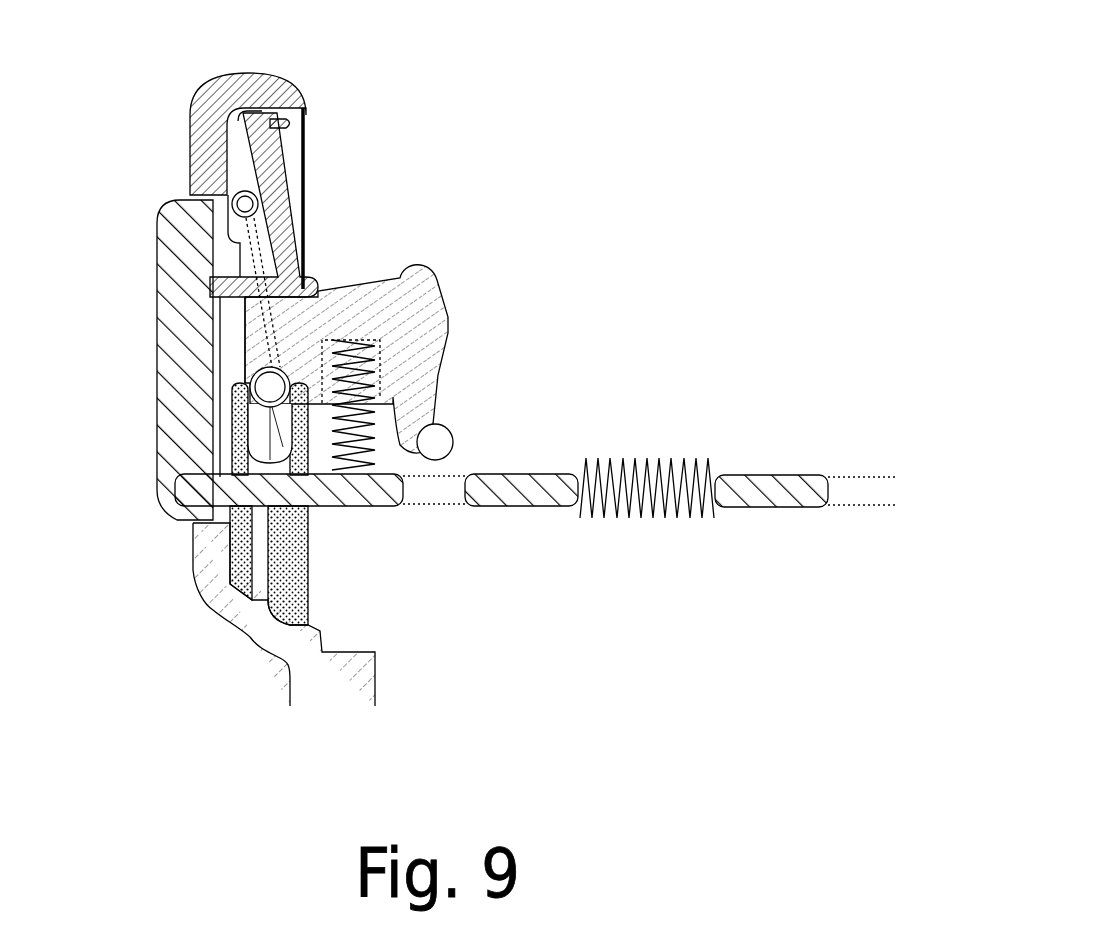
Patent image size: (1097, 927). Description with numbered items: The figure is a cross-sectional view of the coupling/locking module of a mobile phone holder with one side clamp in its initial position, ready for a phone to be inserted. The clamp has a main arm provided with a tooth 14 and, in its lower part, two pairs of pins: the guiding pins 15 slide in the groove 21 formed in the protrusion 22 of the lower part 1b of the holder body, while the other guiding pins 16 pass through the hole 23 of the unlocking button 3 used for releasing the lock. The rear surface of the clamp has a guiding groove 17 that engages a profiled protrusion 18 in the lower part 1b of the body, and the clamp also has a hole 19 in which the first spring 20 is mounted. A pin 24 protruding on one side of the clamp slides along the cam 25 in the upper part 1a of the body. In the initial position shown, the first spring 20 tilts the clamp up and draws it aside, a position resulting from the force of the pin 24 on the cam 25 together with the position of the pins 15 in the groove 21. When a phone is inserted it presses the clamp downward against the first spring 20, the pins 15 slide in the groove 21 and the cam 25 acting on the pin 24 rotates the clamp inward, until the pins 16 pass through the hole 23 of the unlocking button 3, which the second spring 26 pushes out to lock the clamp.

The upper part of the body 1a is at (213, 108).
The lower part of the body 1b is at (252, 620).
The unlocking button 3 is at (187, 340).
The tooth 14 is at (296, 105).
The guiding pins 15 is at (258, 465).
The guiding pins 16 is at (440, 440).
The guiding groove 17 is at (277, 340).
The profiled protrusion 18 is at (238, 249).
The hole 19 is at (372, 328).
The first spring 20 is at (374, 356).
The groove 21 is at (268, 433).
The protrusion 22 is at (236, 472).
The hole 23 is at (430, 493).
The pin 24 is at (253, 203).
The cam 25 is at (276, 163).
The second spring 26 is at (652, 503).